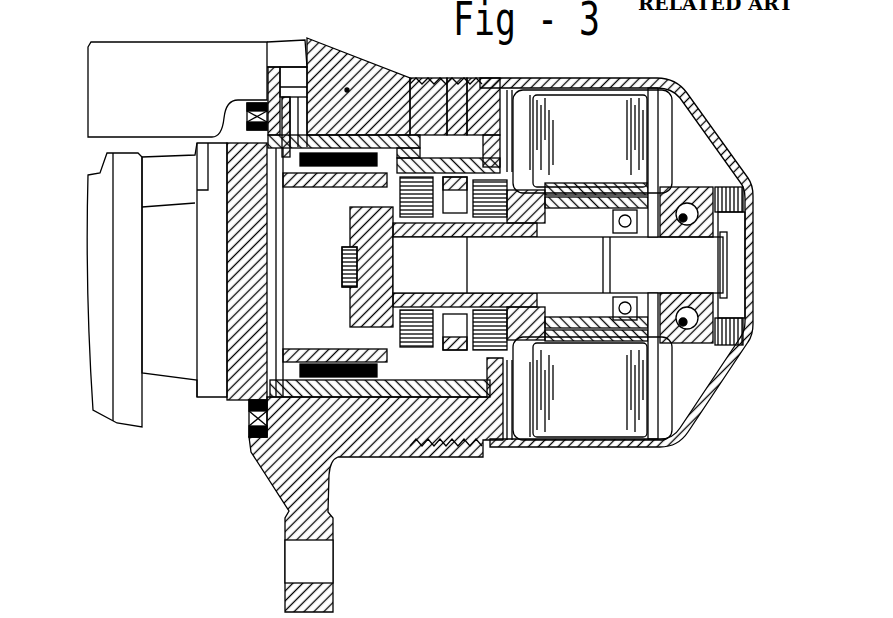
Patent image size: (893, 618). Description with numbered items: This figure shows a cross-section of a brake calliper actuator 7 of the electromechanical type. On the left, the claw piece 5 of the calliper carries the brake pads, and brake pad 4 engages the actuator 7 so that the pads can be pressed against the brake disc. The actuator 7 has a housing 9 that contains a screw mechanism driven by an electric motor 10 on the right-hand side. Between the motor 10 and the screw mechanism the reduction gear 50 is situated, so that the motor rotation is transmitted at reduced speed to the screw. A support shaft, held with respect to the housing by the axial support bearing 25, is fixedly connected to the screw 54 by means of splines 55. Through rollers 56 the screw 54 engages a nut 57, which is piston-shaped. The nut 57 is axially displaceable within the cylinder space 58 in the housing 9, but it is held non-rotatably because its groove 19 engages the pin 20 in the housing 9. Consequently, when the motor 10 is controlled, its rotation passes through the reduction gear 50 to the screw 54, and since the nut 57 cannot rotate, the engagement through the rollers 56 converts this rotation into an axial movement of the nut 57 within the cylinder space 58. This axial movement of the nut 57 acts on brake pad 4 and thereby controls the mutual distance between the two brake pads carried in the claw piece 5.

The brake pad 4 is at (177, 357).
The claw piece 5 is at (118, 62).
The actuator 7 is at (209, 27).
The housing 9 is at (347, 90).
The motor 10 is at (607, 127).
The groove 19 is at (368, 137).
The pin 20 is at (307, 127).
The axial support bearing 25 is at (700, 346).
The reduction gear 50 is at (468, 145).
The screw 54 is at (358, 385).
The splines 55 is at (357, 227).
The rollers 56 is at (264, 462).
The nut 57 is at (421, 84).
The cylinder space 58 is at (437, 140).